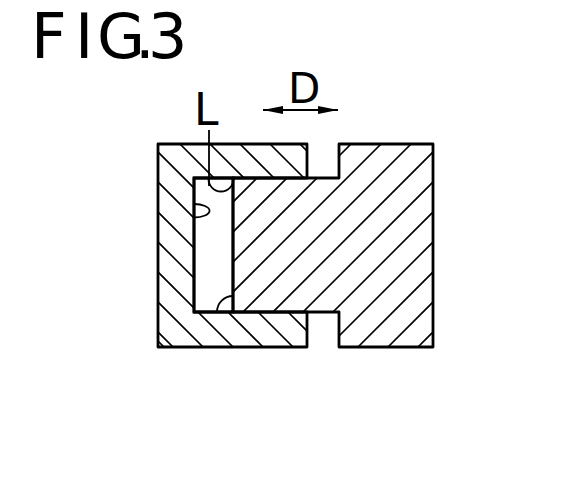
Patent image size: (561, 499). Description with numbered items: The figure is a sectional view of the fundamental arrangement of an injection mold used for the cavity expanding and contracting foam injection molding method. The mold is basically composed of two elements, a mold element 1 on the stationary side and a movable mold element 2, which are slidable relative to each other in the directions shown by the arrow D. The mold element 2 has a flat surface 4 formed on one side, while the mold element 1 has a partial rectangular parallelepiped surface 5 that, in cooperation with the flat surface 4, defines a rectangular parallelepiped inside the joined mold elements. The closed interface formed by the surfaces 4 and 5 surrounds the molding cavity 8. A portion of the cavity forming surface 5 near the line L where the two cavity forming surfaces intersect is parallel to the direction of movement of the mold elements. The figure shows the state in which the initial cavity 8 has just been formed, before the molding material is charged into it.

The mold element 1 is at (167, 330).
The mold element 2 is at (378, 320).
The flat surface 4 is at (218, 316).
The partial rectangular parallelepiped surface 5 is at (196, 213).
The molding cavity 8 is at (206, 266).